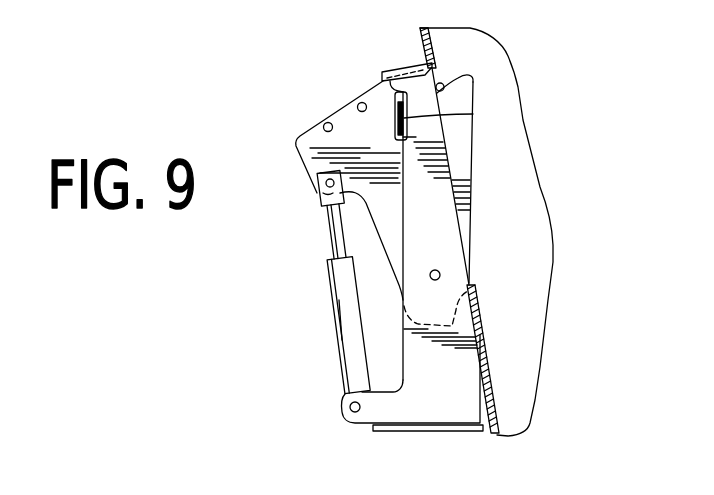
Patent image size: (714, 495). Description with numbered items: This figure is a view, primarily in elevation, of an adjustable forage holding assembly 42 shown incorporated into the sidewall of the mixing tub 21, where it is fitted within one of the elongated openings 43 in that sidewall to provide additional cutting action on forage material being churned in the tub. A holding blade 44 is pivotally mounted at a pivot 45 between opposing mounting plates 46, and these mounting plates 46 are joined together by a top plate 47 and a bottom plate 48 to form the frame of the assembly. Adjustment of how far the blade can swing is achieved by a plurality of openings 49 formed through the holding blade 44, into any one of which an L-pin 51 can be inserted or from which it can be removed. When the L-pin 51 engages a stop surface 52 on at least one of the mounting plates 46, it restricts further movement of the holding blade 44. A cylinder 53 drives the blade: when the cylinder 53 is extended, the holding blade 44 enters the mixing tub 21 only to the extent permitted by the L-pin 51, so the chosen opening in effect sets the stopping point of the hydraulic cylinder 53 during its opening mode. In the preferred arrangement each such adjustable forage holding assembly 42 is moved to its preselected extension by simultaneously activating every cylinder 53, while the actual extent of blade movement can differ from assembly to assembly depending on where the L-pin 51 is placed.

The mixing tub 21 is at (495, 387).
The adjustable forage holding assembly 42 is at (294, 231).
The elongated openings 43 is at (470, 290).
The holding blade 44 is at (460, 155).
The pivot 45 is at (440, 275).
The mounting plates 46 is at (447, 396).
The top plate 47 is at (397, 71).
The bottom plate 48 is at (437, 431).
The openings 49 is at (459, 78).
The L-pin 51 is at (395, 122).
The stop surface 52 is at (473, 116).
The cylinder 53 is at (330, 329).